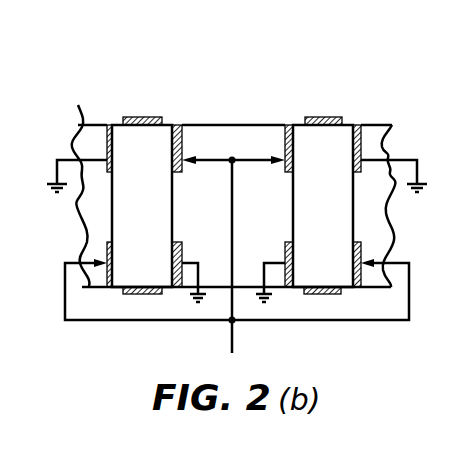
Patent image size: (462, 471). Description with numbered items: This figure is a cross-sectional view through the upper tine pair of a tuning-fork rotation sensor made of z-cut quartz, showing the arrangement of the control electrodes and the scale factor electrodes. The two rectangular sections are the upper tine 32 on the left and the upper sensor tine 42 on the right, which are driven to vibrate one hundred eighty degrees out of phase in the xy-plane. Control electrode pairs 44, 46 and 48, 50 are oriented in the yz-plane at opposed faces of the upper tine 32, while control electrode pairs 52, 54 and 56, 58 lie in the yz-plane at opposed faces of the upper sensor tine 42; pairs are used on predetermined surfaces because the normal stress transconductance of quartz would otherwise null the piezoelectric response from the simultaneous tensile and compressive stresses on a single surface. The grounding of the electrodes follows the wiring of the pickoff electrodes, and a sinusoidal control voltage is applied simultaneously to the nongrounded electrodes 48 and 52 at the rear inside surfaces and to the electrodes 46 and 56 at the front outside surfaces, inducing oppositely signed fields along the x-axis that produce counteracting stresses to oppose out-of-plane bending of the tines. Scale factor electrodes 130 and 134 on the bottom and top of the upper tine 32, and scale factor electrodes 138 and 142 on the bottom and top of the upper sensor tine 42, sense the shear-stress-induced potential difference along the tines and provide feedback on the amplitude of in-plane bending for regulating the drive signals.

The upper tine 32 is at (142, 206).
The upper sensor tine 42 is at (323, 206).
The control electrode 44 is at (107, 137).
The control electrode 46 is at (107, 242).
The control electrode 48 is at (182, 141).
The control electrode 50 is at (182, 242).
The control electrode 52 is at (285, 141).
The control electrode 54 is at (285, 242).
The control electrode 56 is at (361, 246).
The control electrode 58 is at (364, 138).
The lower scale factor electrode 130 is at (140, 294).
The scale factor electrode 134 is at (140, 116).
The lower scale factor electrode 138 is at (321, 294).
The scale factor electrode 142 is at (324, 116).